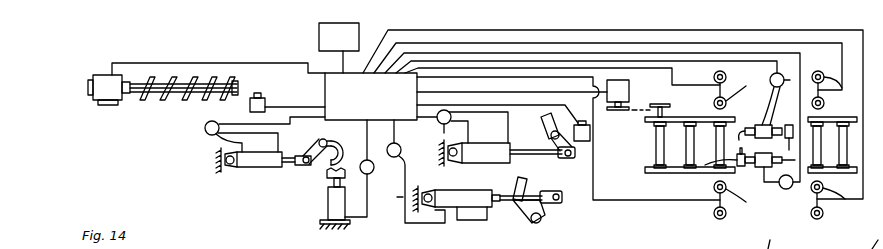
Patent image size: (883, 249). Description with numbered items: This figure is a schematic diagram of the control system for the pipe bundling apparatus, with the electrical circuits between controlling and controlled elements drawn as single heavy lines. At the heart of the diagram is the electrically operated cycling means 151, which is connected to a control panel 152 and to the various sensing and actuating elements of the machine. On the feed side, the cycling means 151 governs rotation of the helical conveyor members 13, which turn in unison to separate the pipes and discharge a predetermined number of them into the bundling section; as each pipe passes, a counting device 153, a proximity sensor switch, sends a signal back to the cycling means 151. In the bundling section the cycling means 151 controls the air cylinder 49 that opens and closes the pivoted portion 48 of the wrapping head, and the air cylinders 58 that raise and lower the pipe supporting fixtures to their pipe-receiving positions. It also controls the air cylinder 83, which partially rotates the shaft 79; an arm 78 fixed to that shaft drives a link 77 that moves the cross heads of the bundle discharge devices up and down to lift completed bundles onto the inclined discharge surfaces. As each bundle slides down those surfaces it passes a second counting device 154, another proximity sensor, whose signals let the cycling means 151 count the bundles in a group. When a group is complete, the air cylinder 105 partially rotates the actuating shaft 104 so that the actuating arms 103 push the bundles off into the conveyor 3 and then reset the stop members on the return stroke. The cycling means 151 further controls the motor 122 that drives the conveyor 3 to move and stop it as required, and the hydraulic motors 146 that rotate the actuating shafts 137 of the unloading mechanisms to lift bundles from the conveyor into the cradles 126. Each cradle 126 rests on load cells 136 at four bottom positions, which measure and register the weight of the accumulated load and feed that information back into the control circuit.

The conveyor 3 is at (689, 107).
The helical conveyor member 13 is at (172, 100).
The pivoted portion 48 is at (333, 142).
The air cylinder 49 is at (258, 168).
The air cylinder 58 is at (328, 212).
The link 77 is at (528, 183).
The arm 78 is at (520, 210).
The shaft 79 is at (537, 225).
The air cylinder 83 is at (457, 222).
The actuating arm 103 is at (543, 120).
The actuating shaft 104 is at (551, 135).
The air cylinder 105 is at (487, 164).
The motor 122 is at (629, 92).
The cradle 126 is at (820, 238).
The load cell 136 is at (726, 77).
The actuating shaft 137 is at (700, 172).
The motor 146 is at (772, 125).
The cycling means 151 is at (325, 72).
The control panel 152 is at (319, 27).
The counting device 153 is at (262, 94).
The counting device 154 is at (590, 140).